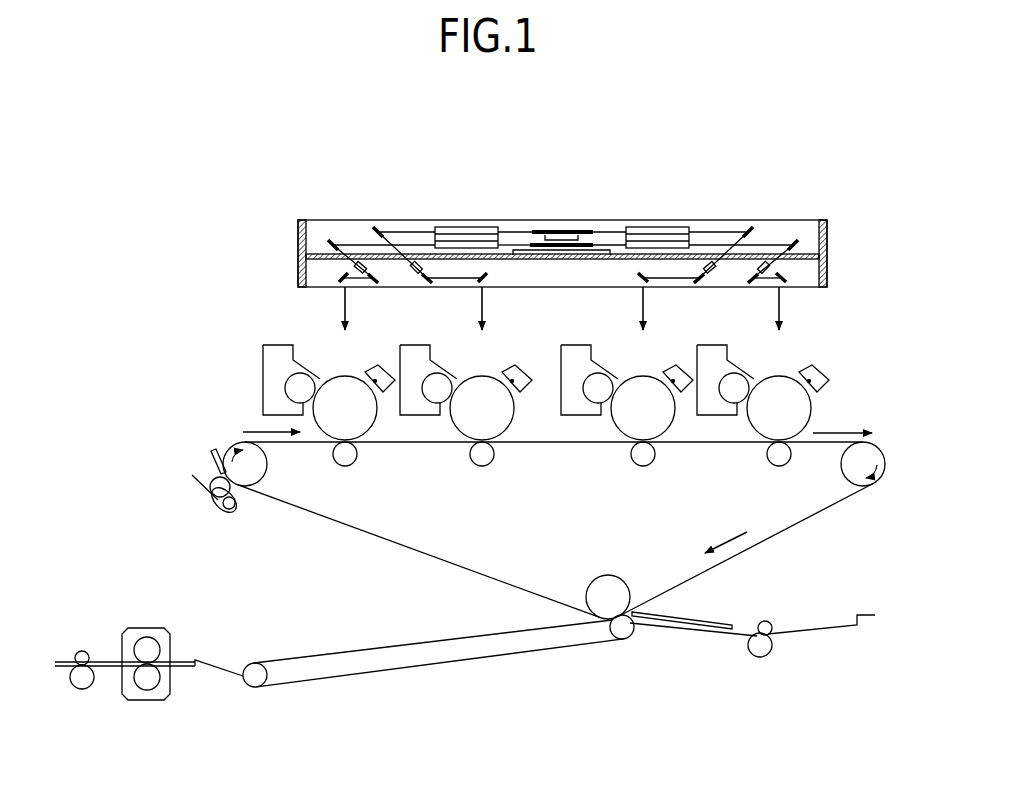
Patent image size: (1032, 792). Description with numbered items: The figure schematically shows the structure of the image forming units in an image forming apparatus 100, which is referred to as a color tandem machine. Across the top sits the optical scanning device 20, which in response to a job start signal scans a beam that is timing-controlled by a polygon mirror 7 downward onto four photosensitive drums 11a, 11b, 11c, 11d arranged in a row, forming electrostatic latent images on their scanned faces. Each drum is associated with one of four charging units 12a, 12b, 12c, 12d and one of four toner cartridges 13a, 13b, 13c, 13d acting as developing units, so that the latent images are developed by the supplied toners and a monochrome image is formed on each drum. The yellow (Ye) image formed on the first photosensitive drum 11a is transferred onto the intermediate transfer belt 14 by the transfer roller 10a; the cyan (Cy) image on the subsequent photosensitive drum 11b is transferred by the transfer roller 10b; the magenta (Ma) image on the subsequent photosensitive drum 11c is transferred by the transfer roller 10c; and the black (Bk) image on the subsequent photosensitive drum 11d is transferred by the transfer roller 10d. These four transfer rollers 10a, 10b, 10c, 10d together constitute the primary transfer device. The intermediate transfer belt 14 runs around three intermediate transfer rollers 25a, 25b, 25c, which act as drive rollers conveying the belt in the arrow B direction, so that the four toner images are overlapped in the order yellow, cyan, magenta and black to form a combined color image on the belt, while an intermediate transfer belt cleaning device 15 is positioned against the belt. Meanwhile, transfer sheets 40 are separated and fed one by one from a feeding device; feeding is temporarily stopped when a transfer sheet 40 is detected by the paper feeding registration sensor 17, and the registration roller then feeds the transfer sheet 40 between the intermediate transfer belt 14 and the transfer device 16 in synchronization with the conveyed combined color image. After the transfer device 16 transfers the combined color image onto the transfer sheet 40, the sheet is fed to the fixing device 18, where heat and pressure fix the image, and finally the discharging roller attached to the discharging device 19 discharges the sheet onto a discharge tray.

The image forming apparatus 100 is at (108, 178).
The polygon mirror 7 is at (562, 222).
The optical scanning device 20 is at (298, 256).
The charging unit 12a is at (280, 345).
The charging unit 12b is at (428, 356).
The charging unit 12c is at (589, 356).
The charging unit 12d is at (725, 356).
The photosensitive drum 11a is at (360, 373).
The photosensitive drum 11b is at (489, 385).
The photosensitive drum 11c is at (650, 385).
The photosensitive drum 11d is at (786, 385).
The toner cartridge 13a is at (383, 392).
The toner cartridge 13b is at (525, 425).
The toner cartridge 13c is at (686, 425).
The toner cartridge 13d is at (846, 374).
The transfer roller 10a is at (347, 466).
The transfer roller 10b is at (487, 476).
The transfer roller 10c is at (647, 476).
The transfer roller 10d is at (784, 476).
The intermediate transfer belt 14 is at (442, 558).
The intermediate transfer roller 25a is at (235, 445).
The intermediate transfer roller 25b is at (882, 445).
The intermediate transfer roller 25c is at (610, 575).
The intermediate transfer belt cleaning device 15 is at (218, 513).
The transfer device 16 is at (633, 633).
The paper feeding registration sensor 17 is at (773, 640).
The fixing device 18 is at (147, 627).
The discharging device 19 is at (82, 652).
The transfer sheet 40 is at (718, 618).